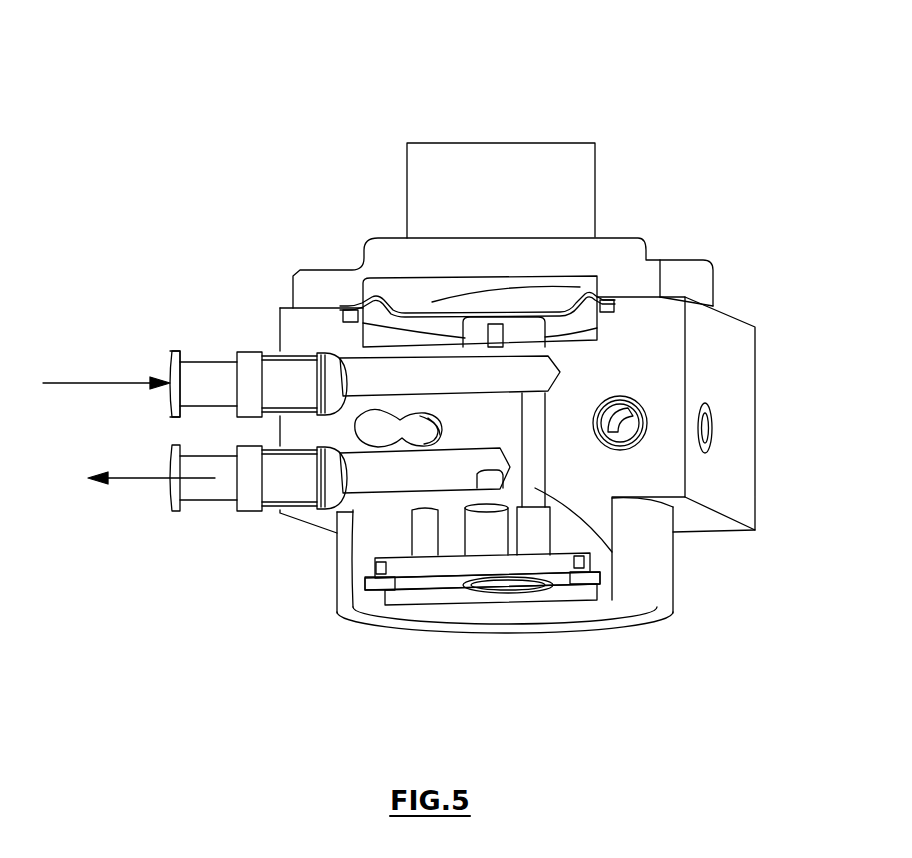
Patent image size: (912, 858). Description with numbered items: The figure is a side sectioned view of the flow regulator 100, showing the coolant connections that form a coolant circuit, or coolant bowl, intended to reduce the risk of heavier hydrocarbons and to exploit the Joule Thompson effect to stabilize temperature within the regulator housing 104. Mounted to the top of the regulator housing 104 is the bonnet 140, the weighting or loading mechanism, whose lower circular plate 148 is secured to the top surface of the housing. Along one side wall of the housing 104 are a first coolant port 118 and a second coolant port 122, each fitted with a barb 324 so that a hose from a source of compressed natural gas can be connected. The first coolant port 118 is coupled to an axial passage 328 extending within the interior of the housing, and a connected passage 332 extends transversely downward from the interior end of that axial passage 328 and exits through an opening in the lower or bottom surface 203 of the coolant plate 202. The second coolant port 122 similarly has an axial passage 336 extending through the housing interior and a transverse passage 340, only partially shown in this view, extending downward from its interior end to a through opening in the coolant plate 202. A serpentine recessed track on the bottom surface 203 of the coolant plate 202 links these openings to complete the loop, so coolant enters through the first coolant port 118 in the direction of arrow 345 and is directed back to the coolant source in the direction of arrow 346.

The flow regulator 100 is at (196, 65).
The regulator housing 104 is at (663, 385).
The first coolant port 118 is at (231, 352).
The second coolant port 122 is at (253, 510).
The bonnet 140 is at (416, 183).
The lower circular plate 148 is at (297, 290).
The coolant plate 202 is at (433, 570).
The bottom surface of the coolant plate 203 is at (432, 600).
The barb 324 is at (170, 370).
The axial passage 328 is at (380, 383).
The connected passage 332 is at (612, 553).
The axial passage 336 is at (357, 482).
The transverse passage 340 is at (483, 540).
The arrow 345 is at (75, 384).
The arrow 346 is at (118, 481).